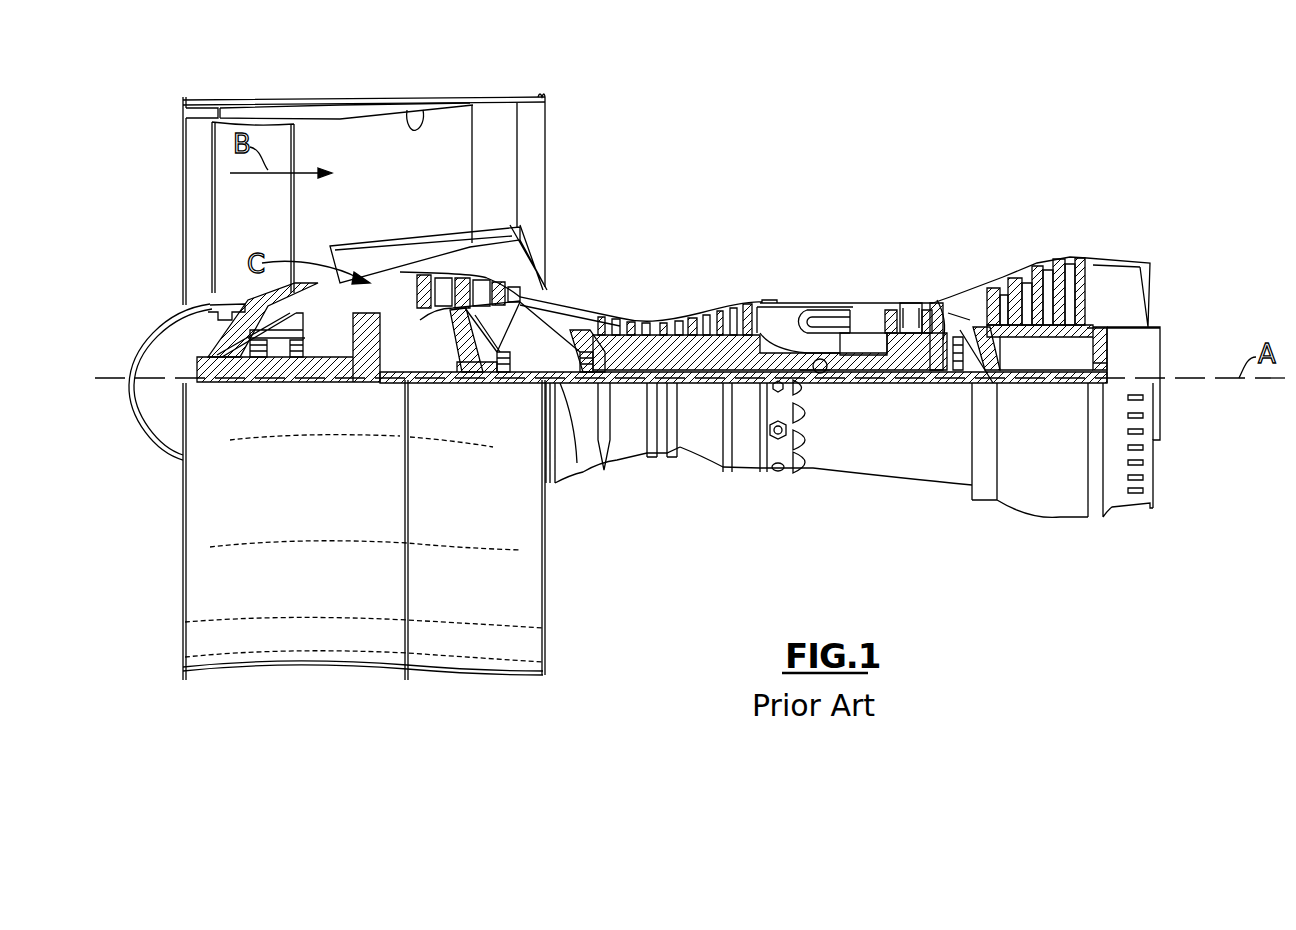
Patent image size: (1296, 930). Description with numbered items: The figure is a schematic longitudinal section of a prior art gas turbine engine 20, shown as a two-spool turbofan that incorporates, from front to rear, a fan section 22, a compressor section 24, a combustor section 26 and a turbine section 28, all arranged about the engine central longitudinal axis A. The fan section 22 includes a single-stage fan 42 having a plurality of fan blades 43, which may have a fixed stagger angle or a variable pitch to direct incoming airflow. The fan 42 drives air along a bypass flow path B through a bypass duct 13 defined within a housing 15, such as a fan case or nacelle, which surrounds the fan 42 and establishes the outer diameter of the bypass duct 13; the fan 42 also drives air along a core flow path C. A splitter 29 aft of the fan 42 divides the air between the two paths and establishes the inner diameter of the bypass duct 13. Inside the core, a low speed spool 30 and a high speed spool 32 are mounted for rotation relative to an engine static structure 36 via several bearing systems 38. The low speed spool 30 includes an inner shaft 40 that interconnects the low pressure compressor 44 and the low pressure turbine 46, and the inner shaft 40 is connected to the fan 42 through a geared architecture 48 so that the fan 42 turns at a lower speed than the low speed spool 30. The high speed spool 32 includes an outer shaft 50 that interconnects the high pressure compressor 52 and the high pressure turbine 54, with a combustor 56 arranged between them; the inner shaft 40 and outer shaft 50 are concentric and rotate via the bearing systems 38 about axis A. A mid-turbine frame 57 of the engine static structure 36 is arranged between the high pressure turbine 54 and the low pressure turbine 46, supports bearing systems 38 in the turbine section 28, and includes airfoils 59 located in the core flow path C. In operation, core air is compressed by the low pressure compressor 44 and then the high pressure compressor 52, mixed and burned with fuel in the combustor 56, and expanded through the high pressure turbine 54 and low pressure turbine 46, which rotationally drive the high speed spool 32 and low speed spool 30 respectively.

The bypass duct 13 is at (417, 130).
The housing 15 is at (363, 103).
The gas turbine engine 20 is at (824, 152).
The fan section 22 is at (291, 88).
The compressor section 24 is at (598, 288).
The combustor section 26 is at (850, 297).
The turbine section 28 is at (1060, 344).
The splitter 29 is at (395, 262).
The low speed spool 30 is at (702, 392).
The high speed spool 32 is at (740, 356).
The engine static structure 36 is at (743, 474).
The bearing systems 38 is at (503, 368).
The inner shaft 40 is at (573, 440).
The fan 42 is at (287, 207).
The fan blades 43 is at (281, 231).
The low pressure compressor 44 is at (569, 267).
The low pressure turbine 46 is at (1071, 275).
The geared architecture 48 is at (370, 365).
The outer shaft 50 is at (815, 365).
The high pressure compressor 52 is at (682, 317).
The high pressure turbine 54 is at (890, 308).
The combustor 56 is at (822, 323).
The mid-turbine frame 57 is at (956, 286).
The airfoils 59 is at (968, 360).